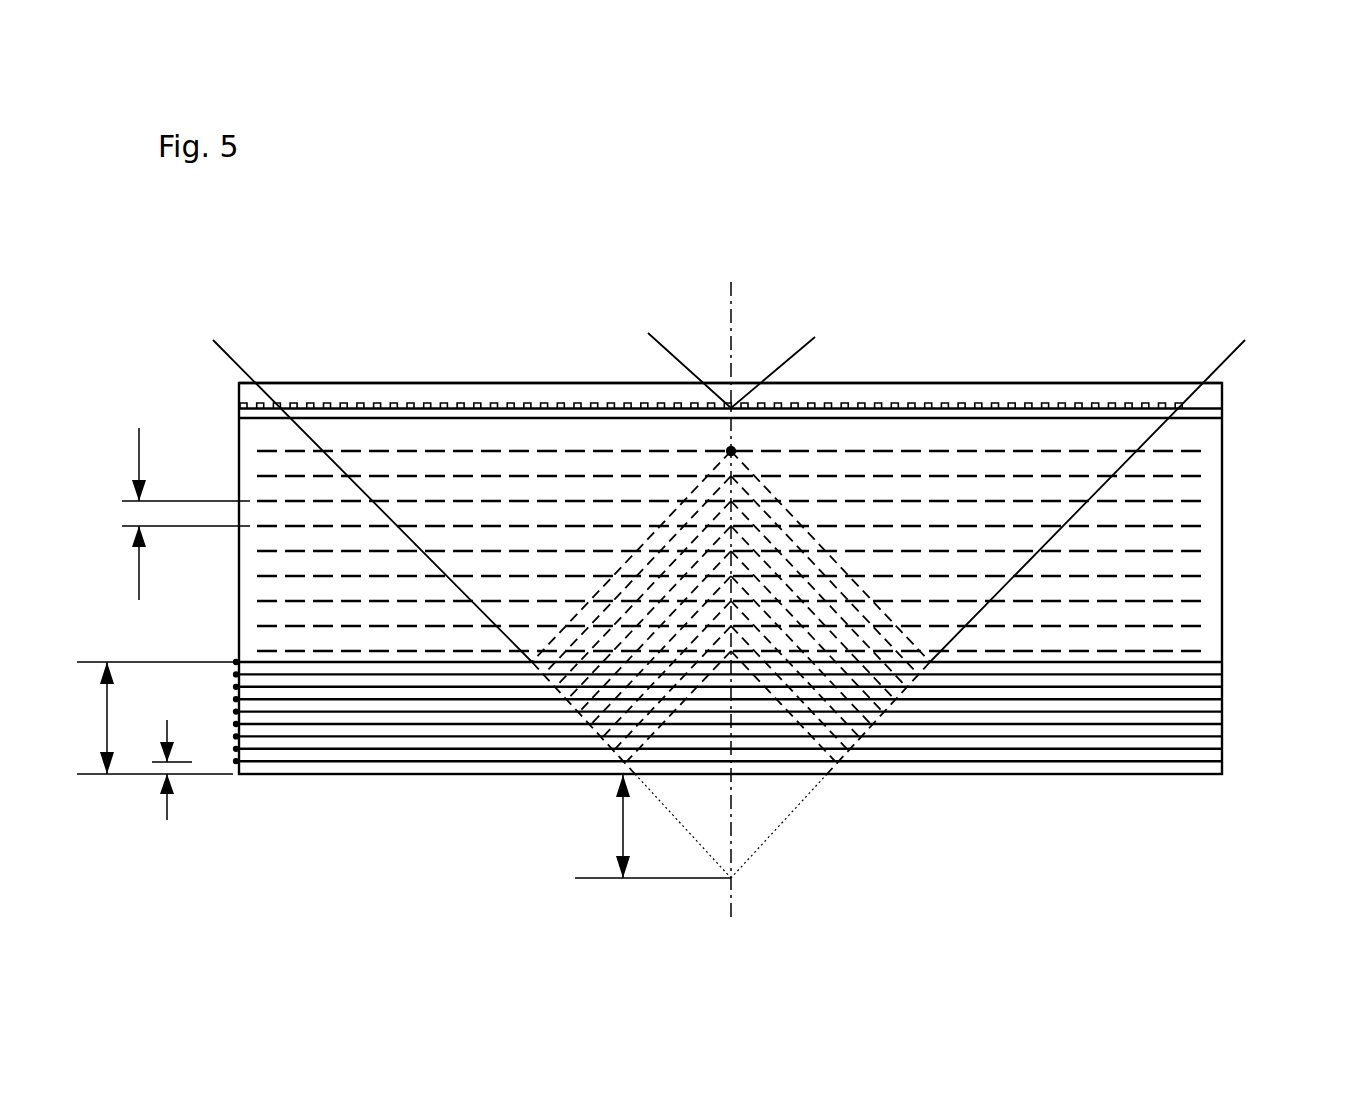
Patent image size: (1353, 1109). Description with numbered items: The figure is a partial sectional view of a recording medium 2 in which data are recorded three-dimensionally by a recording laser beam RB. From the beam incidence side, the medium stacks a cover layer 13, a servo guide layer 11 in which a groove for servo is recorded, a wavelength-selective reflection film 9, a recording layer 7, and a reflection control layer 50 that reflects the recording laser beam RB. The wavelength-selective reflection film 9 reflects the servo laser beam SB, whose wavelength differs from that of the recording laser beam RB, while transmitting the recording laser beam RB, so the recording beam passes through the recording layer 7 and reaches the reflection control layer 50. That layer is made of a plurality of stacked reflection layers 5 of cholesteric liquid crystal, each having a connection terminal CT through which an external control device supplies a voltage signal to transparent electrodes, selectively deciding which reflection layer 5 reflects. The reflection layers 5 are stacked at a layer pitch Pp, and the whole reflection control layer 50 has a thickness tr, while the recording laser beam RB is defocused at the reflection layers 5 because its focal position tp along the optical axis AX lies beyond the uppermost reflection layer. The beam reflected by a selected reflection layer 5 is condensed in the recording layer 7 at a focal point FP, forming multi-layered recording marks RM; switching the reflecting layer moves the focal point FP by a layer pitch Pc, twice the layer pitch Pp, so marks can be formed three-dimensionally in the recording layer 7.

The recording medium 2 is at (405, 312).
The cover layer 13 is at (1212, 392).
The servo guide layer 11 is at (1182, 405).
The wavelength-selective reflection film 9 is at (1197, 415).
The recording layer 7 is at (1212, 485).
The reflection layer 5 is at (1223, 761).
The reflection control layer 50 is at (789, 711).
The optical axis AX is at (722, 584).
The focal point FP is at (734, 450).
The recording marks RM is at (657, 450).
The recording laser beam RB is at (1215, 362).
The servo laser beam SB is at (815, 337).
The connection terminal CT is at (237, 761).
The layer pitch Pc is at (159, 514).
The layer thickness tr is at (154, 718).
The layer pitch Pp is at (172, 790).
The focal depth tp is at (653, 826).